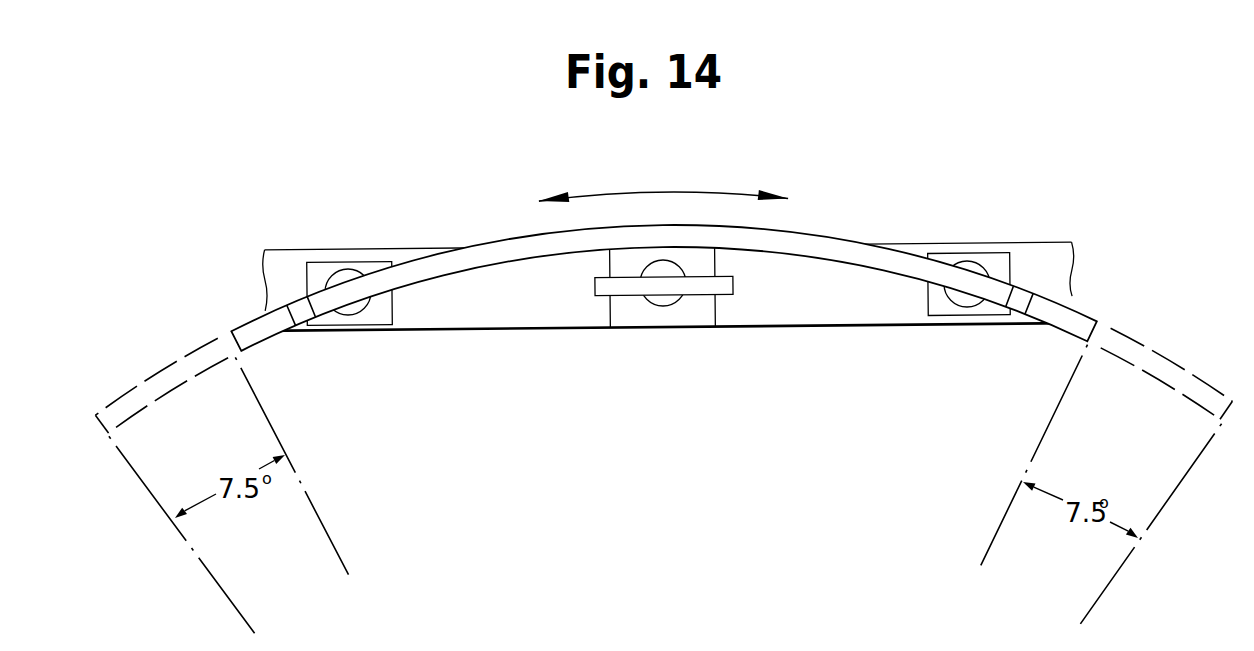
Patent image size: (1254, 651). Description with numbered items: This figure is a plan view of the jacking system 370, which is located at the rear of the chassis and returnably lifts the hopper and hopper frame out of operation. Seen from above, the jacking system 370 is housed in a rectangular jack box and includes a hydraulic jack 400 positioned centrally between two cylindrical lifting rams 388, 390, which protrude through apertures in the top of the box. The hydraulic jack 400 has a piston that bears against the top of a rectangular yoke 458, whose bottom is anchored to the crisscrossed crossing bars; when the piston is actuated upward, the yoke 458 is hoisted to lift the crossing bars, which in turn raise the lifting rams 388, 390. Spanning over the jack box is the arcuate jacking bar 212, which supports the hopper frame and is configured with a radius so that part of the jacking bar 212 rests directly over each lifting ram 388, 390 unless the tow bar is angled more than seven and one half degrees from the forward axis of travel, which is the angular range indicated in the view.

The arcuate jacking bar 212 is at (843, 247).
The jacking system 370 is at (628, 350).
The lifting ram 390 is at (355, 310).
The hydraulic jack 400 is at (673, 305).
The lifting ram 388 is at (965, 298).
The rectangular yoke 458 is at (725, 298).